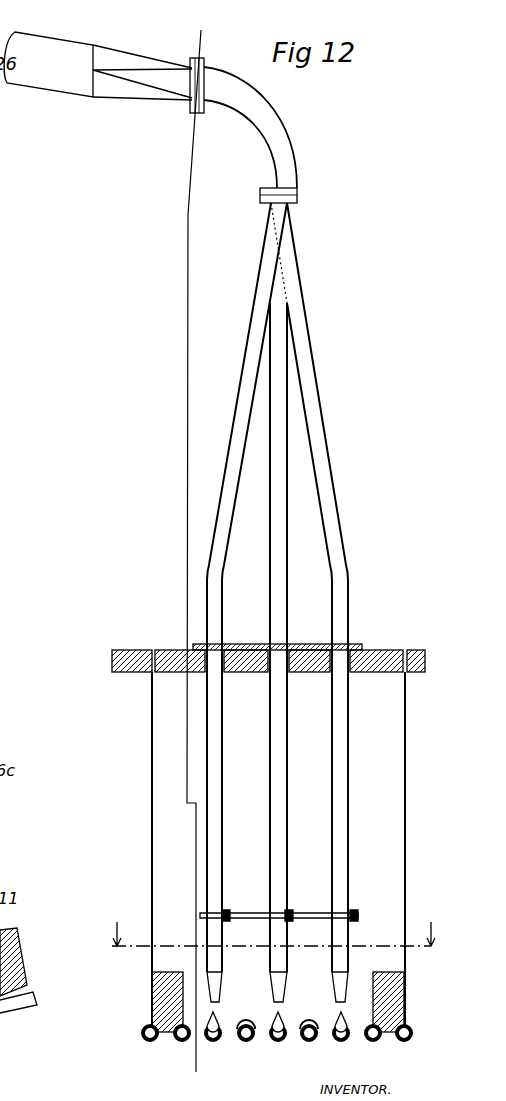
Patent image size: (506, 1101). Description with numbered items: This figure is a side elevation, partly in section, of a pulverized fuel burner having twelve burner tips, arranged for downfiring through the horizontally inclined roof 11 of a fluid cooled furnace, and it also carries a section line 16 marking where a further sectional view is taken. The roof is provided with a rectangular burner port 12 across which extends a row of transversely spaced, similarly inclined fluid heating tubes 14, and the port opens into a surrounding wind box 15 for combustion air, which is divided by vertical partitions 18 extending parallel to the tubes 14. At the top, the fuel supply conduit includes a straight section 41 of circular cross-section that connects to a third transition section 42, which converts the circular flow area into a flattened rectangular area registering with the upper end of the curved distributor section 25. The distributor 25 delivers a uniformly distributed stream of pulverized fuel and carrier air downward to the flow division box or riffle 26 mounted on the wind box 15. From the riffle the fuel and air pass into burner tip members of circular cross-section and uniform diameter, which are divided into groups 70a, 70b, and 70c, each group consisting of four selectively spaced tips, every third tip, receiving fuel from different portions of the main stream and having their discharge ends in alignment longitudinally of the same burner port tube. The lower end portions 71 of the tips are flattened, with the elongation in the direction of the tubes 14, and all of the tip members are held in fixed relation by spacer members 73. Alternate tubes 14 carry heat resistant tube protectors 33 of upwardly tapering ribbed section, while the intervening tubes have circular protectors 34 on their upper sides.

The horizontally inclined roof 11 is at (194, 35).
The rectangular burner port 12 is at (328, 1028).
The fluid heating tubes 14 is at (277, 1042).
The wind box 15 is at (378, 650).
The section line 16- 16 is at (275, 919).
The vertical partitions 18 is at (152, 797).
The curved distributor section 25 is at (283, 127).
The flow division box or riffle 26 is at (300, 196).
The heat resistant tube protectors 33 is at (283, 1022).
The circular protectors 34 is at (246, 1024).
The straight section 41 is at (53, 78).
The third transition section 42 is at (147, 90).
The burner tip group 70a is at (343, 810).
The burner tip group 70b is at (284, 804).
The burner tip group 70c is at (217, 806).
The flattened lower end portions 71 is at (332, 982).
The spacer members 73 is at (243, 910).